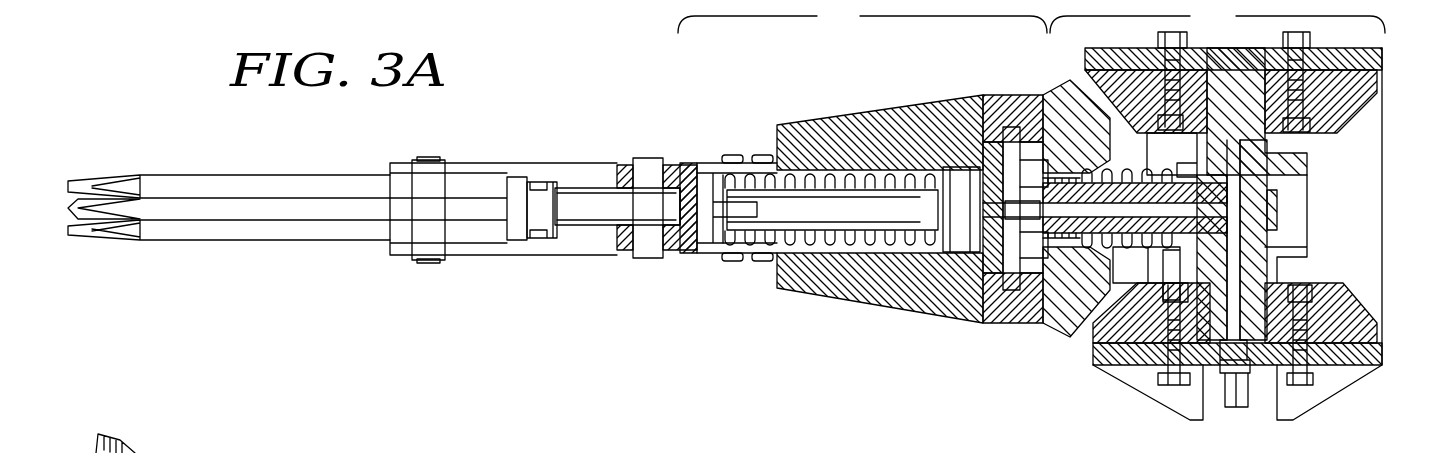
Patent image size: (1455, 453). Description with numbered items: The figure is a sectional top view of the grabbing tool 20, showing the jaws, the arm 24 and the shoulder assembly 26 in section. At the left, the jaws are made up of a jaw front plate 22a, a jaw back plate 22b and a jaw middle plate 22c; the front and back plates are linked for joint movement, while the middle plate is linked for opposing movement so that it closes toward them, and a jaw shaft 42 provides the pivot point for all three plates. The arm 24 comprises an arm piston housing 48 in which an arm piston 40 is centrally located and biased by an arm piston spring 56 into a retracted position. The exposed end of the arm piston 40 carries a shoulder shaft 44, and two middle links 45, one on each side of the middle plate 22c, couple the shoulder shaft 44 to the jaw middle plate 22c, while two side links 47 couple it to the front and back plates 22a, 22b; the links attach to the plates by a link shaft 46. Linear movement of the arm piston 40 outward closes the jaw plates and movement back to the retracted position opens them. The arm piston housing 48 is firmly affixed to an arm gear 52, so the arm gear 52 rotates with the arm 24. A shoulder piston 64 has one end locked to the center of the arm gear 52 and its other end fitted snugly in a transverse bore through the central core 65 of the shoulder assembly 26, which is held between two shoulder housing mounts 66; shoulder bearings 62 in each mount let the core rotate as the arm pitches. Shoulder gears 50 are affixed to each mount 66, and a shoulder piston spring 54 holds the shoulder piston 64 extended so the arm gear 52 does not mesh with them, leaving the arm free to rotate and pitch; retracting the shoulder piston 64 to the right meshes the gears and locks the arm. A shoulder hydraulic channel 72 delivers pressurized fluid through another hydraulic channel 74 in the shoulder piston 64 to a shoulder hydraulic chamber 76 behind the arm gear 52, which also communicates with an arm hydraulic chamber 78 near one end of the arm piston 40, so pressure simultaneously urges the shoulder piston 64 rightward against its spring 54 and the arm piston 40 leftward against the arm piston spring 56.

The tool 20 is at (530, 452).
The jaw front plate 22a is at (240, 241).
The jaw back plate 22b is at (237, 132).
The jaw middle plate 22c is at (72, 213).
The arm 24 is at (836, 20).
The shoulder assembly 26 is at (1210, 20).
The arm piston 40 is at (853, 232).
The jaw shaft 42 is at (440, 160).
The shoulder shaft 44 is at (648, 158).
The middle links 45 is at (605, 226).
The link shaft 46 is at (537, 240).
The side links 47 is at (520, 167).
The arm piston housing 48 is at (897, 107).
The shoulder gears 50 is at (1360, 110).
The arm gear 52 is at (1058, 92).
The shoulder piston spring 54 is at (1151, 313).
The arm piston spring 56 is at (857, 172).
The shoulder bearings 62 is at (1290, 160).
The shoulder piston 64 is at (1223, 170).
The central core 65 is at (1225, 48).
The shoulder housing mounts 66 is at (1382, 50).
The shoulder hydraulic channel 72 is at (1222, 405).
The hydraulic channel 74 is at (1048, 175).
The shoulder hydraulic chamber 76 is at (1048, 247).
The arm hydraulic chamber 78 is at (977, 256).